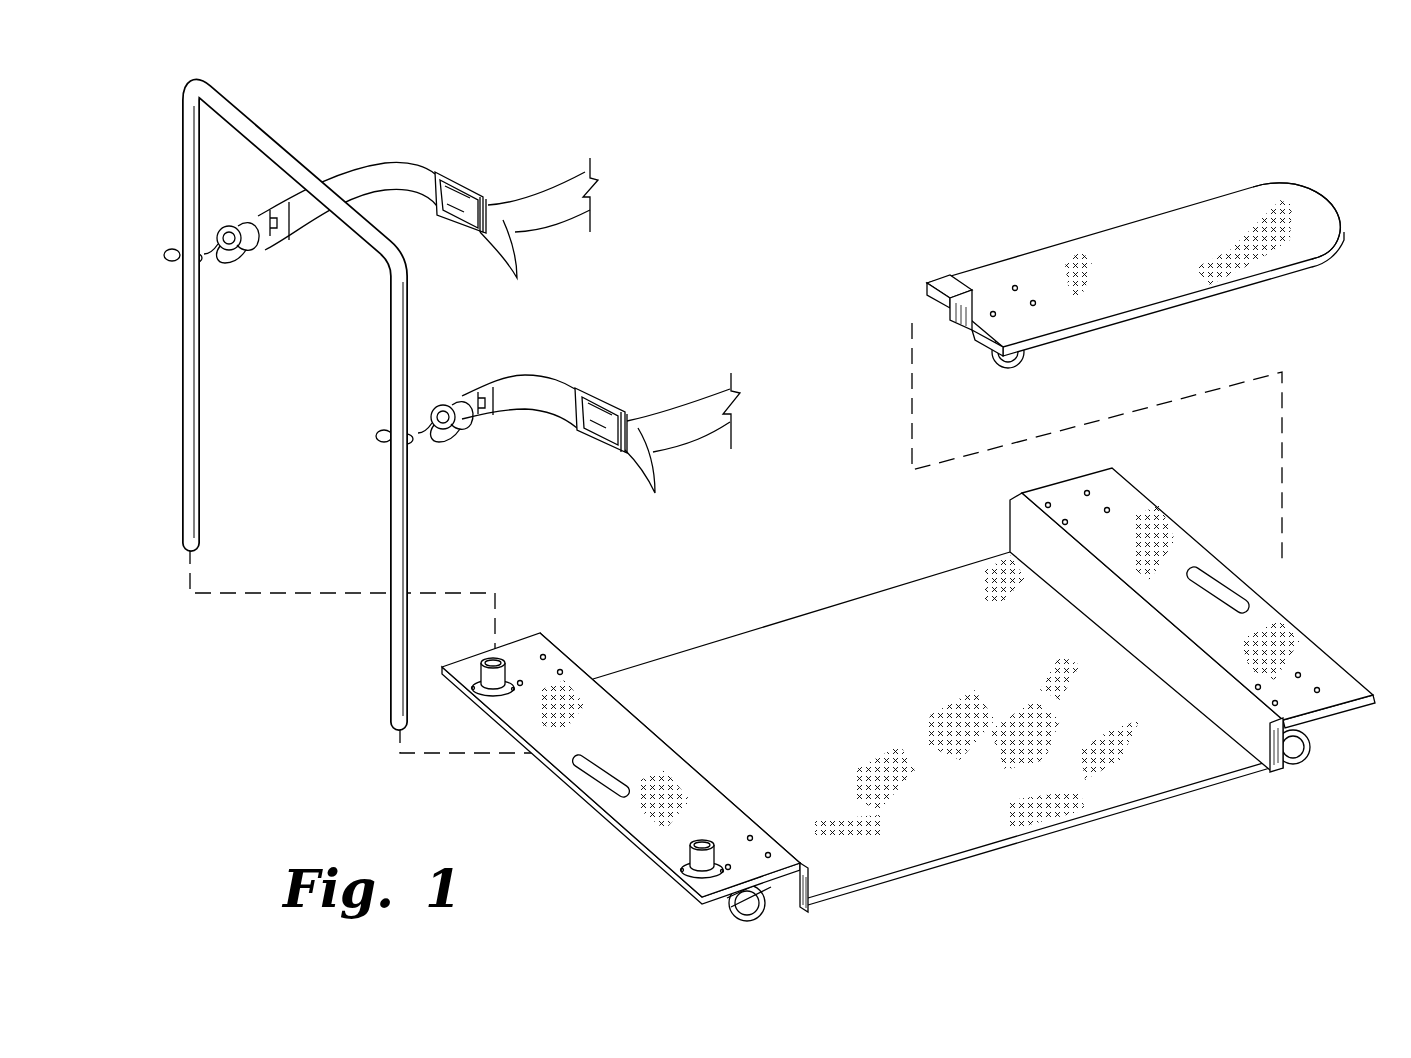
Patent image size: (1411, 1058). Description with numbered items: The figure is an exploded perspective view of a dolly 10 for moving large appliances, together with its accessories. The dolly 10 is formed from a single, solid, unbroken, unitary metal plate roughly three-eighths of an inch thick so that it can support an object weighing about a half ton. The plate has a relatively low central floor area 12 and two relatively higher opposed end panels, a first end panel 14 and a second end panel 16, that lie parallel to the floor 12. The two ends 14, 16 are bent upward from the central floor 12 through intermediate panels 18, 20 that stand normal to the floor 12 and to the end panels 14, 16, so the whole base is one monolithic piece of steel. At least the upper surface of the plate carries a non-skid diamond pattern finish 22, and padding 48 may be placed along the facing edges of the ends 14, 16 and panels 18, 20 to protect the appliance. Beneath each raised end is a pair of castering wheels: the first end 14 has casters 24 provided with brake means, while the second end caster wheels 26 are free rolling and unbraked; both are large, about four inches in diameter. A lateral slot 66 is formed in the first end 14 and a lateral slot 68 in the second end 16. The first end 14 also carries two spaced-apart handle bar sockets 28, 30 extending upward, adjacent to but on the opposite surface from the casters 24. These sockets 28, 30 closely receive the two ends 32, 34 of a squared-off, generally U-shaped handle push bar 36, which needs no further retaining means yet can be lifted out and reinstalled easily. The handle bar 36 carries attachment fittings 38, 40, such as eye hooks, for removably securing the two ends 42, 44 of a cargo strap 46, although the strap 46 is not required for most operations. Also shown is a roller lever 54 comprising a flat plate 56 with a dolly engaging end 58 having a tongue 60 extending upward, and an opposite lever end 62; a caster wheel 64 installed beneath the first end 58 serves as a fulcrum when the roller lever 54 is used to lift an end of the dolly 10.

The dolly 10 is at (1190, 815).
The central floor area 12 is at (912, 730).
The first end panel 14 is at (680, 778).
The second end panel 16 is at (1198, 645).
The intermediate panel 18 is at (810, 912).
The intermediate panel 20 is at (1282, 772).
The non-skid diamond pattern finish 22 is at (1158, 525).
The casters 24 is at (735, 905).
The second end caster wheels 26 is at (1308, 750).
The handle bar socket 28 is at (472, 667).
The handle bar socket 30 is at (698, 868).
The handle bar end 32 is at (200, 520).
The handle bar end 34 is at (392, 680).
The handle push bar 36 is at (297, 396).
The attachment fitting 38 is at (230, 222).
The attachment fitting 40 is at (445, 404).
The cargo strap end 42 is at (240, 262).
The cargo strap end 44 is at (468, 440).
The cargo strap 46 is at (550, 226).
The padding 48 is at (1013, 516).
The roller lever 54 is at (1079, 252).
The flat plate 56 is at (1170, 215).
The dolly engaging end 58 is at (909, 268).
The tongue 60 is at (953, 277).
The lever end 62 is at (1278, 188).
The caster wheel 64 is at (994, 345).
The lateral slot 66 is at (578, 770).
The lateral slot 68 is at (1246, 594).